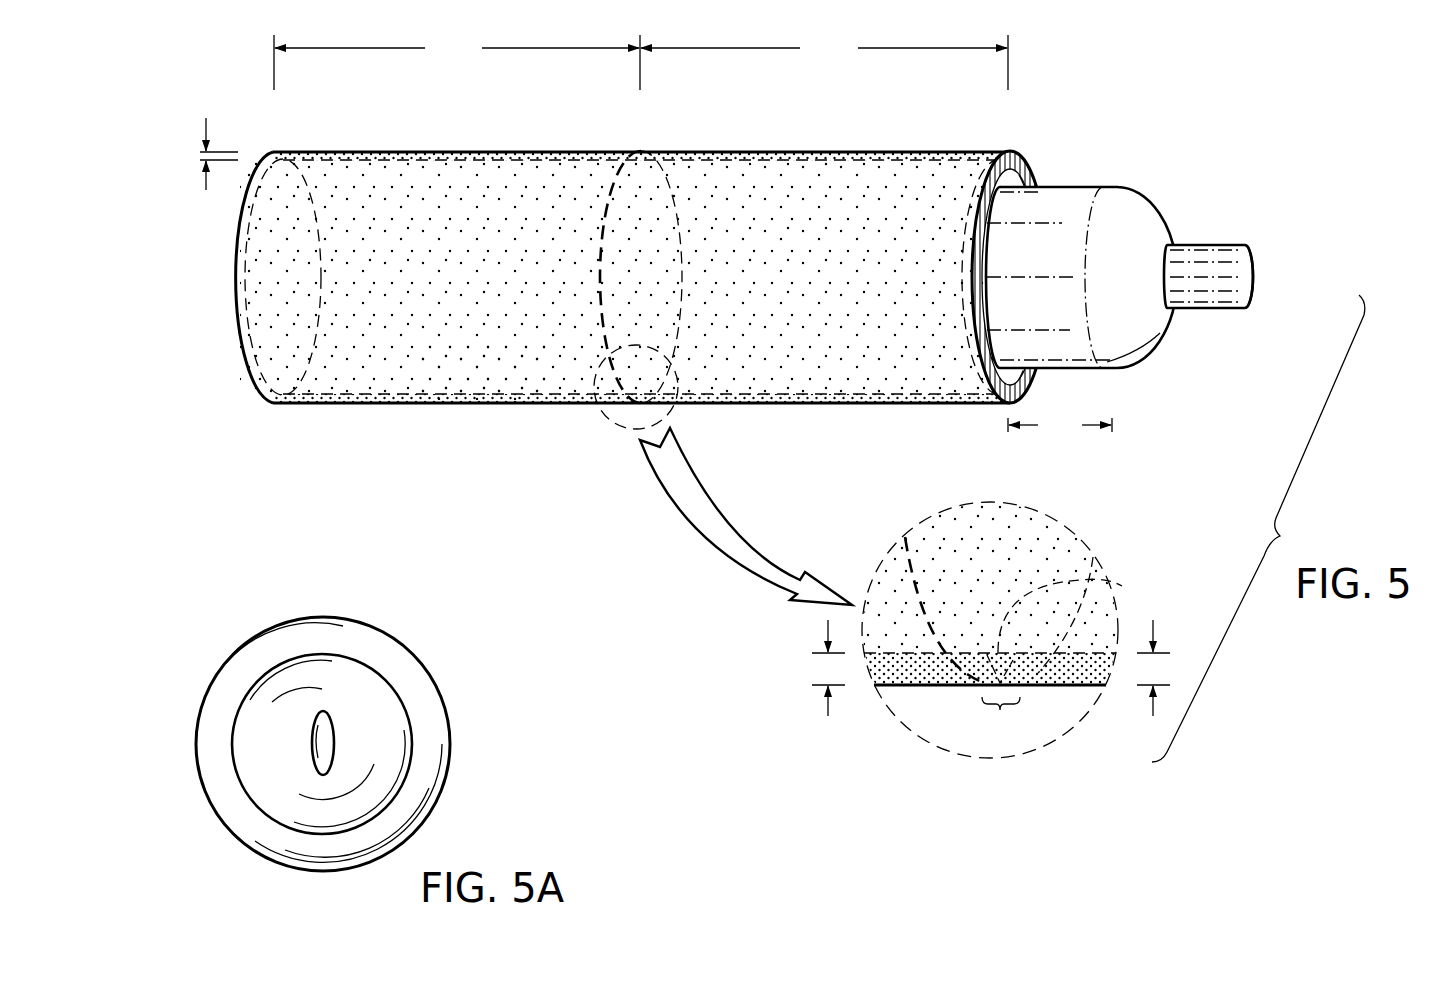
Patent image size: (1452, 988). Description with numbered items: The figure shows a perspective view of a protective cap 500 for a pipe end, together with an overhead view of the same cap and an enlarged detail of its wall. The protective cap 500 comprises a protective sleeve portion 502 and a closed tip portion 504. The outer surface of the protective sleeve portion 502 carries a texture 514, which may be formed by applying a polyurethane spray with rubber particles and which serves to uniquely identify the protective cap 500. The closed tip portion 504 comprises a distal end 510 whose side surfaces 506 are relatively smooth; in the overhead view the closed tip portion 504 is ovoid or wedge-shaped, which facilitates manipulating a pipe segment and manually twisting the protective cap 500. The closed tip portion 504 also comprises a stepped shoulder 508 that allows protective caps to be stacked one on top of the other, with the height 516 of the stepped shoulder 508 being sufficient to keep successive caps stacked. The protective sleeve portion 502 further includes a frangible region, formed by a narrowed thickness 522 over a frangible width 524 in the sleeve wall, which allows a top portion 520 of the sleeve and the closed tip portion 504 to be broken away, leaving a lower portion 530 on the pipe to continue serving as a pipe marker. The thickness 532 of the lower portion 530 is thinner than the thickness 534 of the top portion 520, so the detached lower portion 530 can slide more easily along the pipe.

In FIG. 5, the protective cap 500 is at (188, 254).
In FIG. 5, the protective sleeve portion 502 is at (274, 123).
In FIG. 5, the closed tip portion 504 is at (1005, 449).
In FIG. 5A, the closed tip portion 504 is at (218, 653).
In FIG. 5, the side surface of the distal end 506 is at (1200, 268).
In FIG. 5A, the side surface of the distal end 506 is at (325, 745).
In FIG. 5, the stepped shoulder 508 is at (1016, 165).
In FIG. 5A, the stepped shoulder 508 is at (392, 660).
In FIG. 5, the distal end 510 is at (1256, 273).
In FIG. 5, the texture 514 is at (508, 387).
In FIG. 5, the height 516 is at (1060, 425).
In FIG. 5, the top portion 520 is at (824, 62).
In FIG. 5, the narrowed thickness 522 is at (1105, 578).
In FIG. 5, the frangible width 524 is at (1000, 717).
In FIG. 5, the lower portion 530 is at (457, 62).
In FIG. 5, the thickness of the lower portion 532 is at (828, 668).
In FIG. 5, the thickness of the top portion 534 is at (203, 153).